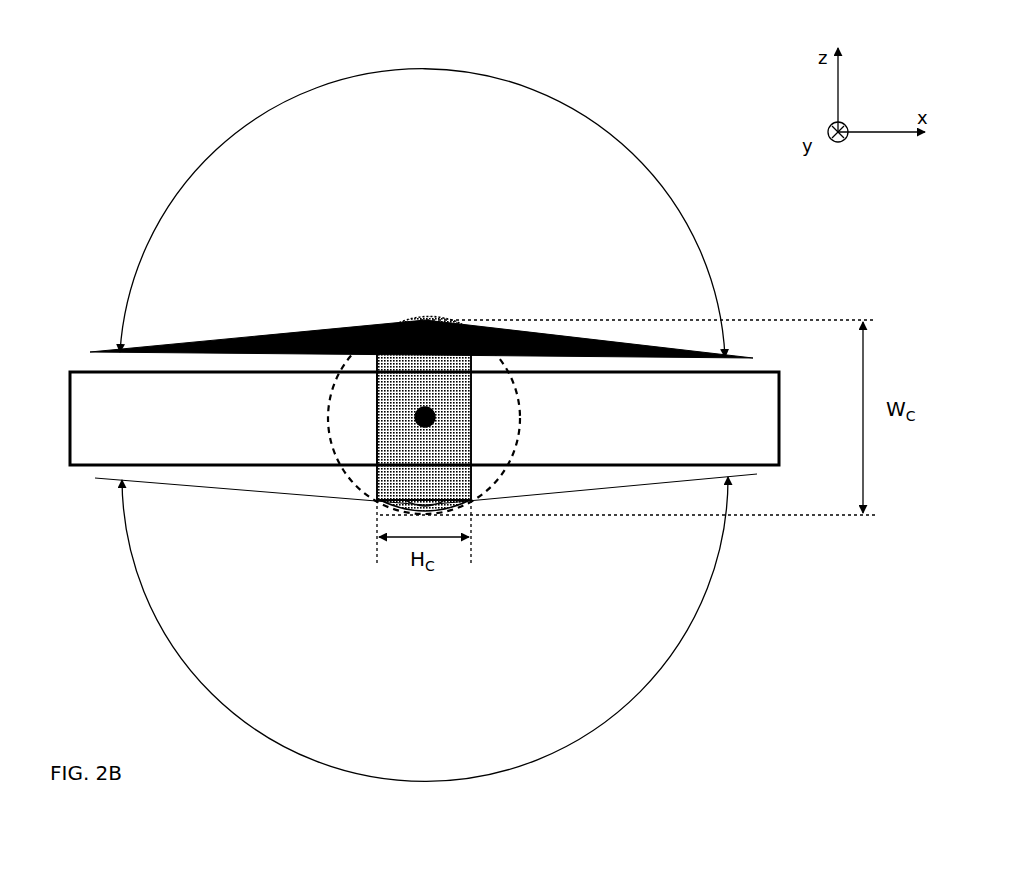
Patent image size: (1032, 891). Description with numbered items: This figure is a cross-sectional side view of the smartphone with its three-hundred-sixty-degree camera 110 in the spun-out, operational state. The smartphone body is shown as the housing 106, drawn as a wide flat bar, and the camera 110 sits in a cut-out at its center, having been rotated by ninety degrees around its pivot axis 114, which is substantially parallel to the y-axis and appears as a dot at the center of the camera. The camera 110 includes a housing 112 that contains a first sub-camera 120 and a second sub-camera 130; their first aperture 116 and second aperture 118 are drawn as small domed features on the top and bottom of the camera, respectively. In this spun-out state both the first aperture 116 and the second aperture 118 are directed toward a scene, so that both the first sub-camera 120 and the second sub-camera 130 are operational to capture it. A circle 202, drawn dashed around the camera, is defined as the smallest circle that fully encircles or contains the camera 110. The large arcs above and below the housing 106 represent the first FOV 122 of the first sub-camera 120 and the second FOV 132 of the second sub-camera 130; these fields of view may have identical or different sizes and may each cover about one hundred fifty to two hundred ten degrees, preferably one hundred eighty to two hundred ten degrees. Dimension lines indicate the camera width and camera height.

The housing 106 is at (770, 470).
The 360-degree camera 110 is at (505, 322).
The housing 112 is at (372, 390).
The pivot axis 114 is at (440, 416).
The first aperture 116 is at (412, 318).
The second aperture 118 is at (383, 503).
The first sub-camera 120 is at (382, 362).
The first FOV 122 is at (628, 97).
The second sub-camera 130 is at (480, 488).
The second FOV 132 is at (710, 622).
The circle 202 is at (326, 418).